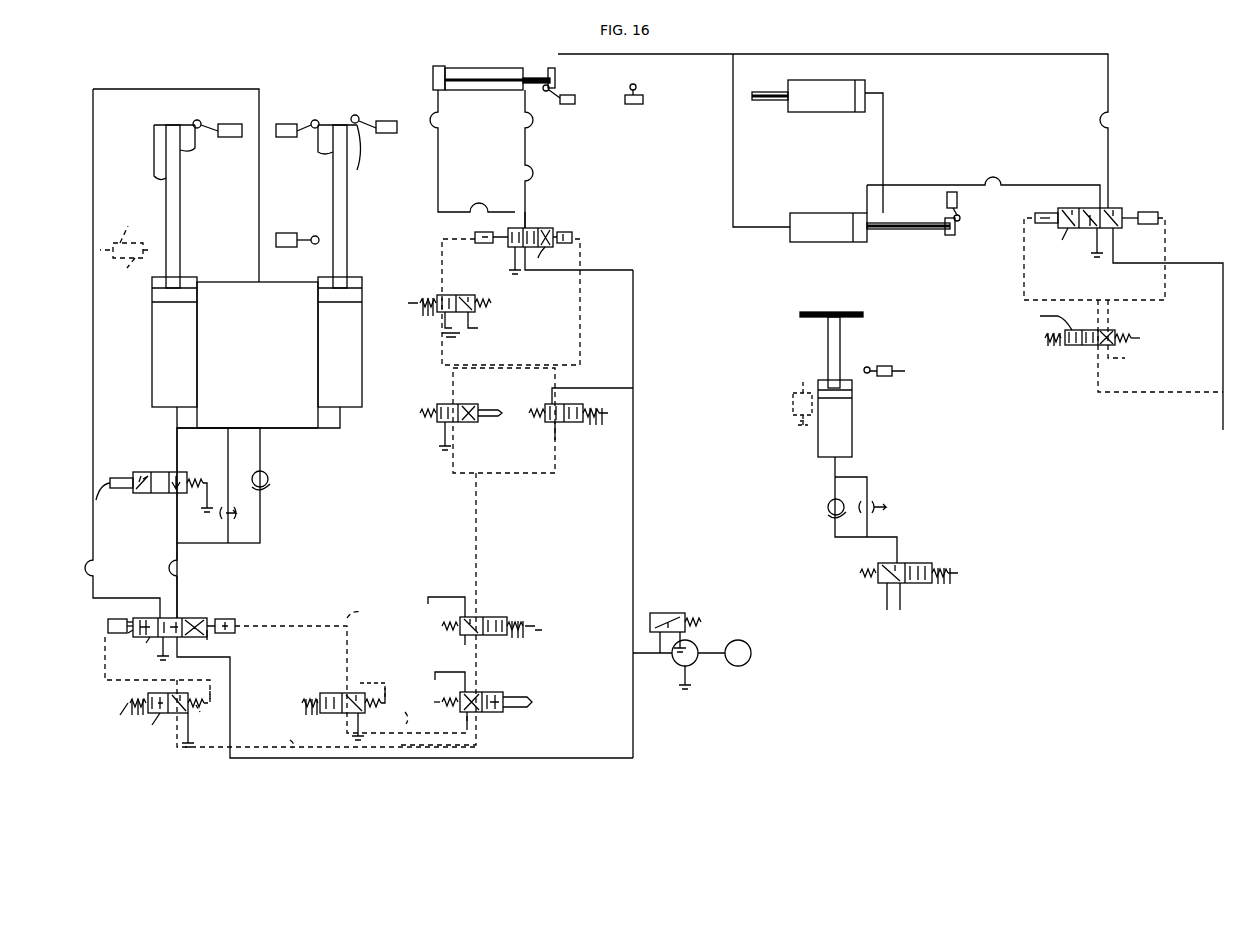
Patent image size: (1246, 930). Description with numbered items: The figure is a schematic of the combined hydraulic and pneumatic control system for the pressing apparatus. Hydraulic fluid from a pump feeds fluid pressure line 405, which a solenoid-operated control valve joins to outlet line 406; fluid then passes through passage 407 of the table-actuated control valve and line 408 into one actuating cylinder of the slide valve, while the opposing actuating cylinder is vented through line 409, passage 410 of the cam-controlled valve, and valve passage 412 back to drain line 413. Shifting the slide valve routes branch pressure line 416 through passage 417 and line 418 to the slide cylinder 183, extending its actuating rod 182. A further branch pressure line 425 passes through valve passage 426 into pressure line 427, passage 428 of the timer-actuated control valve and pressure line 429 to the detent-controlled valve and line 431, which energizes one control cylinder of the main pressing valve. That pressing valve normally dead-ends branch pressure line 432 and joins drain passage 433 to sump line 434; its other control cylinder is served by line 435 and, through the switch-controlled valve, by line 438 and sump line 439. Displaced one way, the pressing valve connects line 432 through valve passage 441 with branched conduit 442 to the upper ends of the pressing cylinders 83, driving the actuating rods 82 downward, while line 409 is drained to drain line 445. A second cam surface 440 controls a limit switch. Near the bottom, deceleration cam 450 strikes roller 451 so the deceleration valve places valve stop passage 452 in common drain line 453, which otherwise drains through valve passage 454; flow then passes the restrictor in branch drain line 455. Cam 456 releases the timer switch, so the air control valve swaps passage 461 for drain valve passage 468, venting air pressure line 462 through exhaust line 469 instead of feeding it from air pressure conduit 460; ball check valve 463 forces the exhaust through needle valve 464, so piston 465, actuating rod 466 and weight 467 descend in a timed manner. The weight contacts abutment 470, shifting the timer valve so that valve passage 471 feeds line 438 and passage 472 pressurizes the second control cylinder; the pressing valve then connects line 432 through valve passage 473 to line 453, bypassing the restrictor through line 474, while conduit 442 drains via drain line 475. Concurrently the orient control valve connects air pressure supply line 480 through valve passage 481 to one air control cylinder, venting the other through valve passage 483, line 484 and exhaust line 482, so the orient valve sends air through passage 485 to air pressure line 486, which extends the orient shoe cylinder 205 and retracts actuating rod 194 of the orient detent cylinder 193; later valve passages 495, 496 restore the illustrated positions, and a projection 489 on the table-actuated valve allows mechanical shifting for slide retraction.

The actuating rod 82 is at (180, 222).
The fluid pressure actuated cylinder 83 is at (197, 352).
The slide cylinder actuating rod 182 is at (553, 68).
The slide cylinder 183 is at (470, 68).
The orient detent cylinder 193 is at (845, 196).
The orient detent cylinder actuating rod 194 is at (900, 235).
The orient shoe cylinder 205 is at (815, 112).
The fluid pressure line 405 is at (633, 505).
The outlet line 406 is at (530, 478).
The passage 407 is at (458, 422).
The line 408 is at (580, 318).
The line 409 is at (442, 262).
The passage 410 is at (440, 312).
The valve passage 412 is at (437, 406).
The drain line 413 is at (445, 436).
The branch pressure line 416 is at (603, 270).
The passage 417 is at (549, 257).
The line 418 is at (438, 163).
The branch pressure line 425 is at (476, 540).
The valve passage 426 is at (507, 620).
The pressure line 427 is at (476, 658).
The passage 428 is at (478, 712).
The pressure line 429 is at (398, 713).
The line 431 is at (351, 666).
The branch pressure line 432 is at (230, 672).
The drain passage 433 is at (168, 612).
The drain or sump line 434 is at (160, 662).
The line 435 is at (105, 655).
The line 438 is at (272, 737).
The sump line 439 is at (452, 660).
The second cam surface 440 is at (318, 146).
The valve passage 441 is at (200, 637).
The branched conduit 442 is at (93, 531).
The sump or drain line 445 is at (455, 333).
The deceleration cam 450 is at (154, 150).
The roller 451 is at (124, 269).
The valve stop passage 452 is at (133, 470).
The common drain line 453 is at (177, 440).
The valve passage 454 is at (190, 620).
The branch drain line 455 is at (228, 440).
The cam 456 is at (190, 150).
The air pressure conduit 460 is at (887, 605).
The passage 461 is at (888, 563).
The air pressure line 462 is at (890, 537).
The one-way ball check valve 463 is at (828, 504).
The variable orifice needle valve 464 is at (872, 498).
The piston 465 is at (852, 395).
The actuating rod 466 is at (840, 342).
The weight 467 is at (810, 312).
The drain valve passage 468 is at (928, 583).
The exhaust line 469 is at (900, 605).
The roller or abutment 470 is at (803, 375).
The valve passage 471 is at (510, 697).
The passage 472 is at (148, 695).
The valve passage 473 is at (146, 615).
The line 474 is at (260, 520).
The drain line 475 is at (150, 644).
The air pressure supply line 480 is at (1223, 352).
The valve passage 481 is at (1040, 319).
The exhaust line 482 is at (1160, 346).
The valve passage 483 is at (1090, 318).
The line 484 is at (1165, 232).
The passage 485 is at (1060, 242).
The air pressure line 486 is at (975, 160).
The plunger 489 is at (508, 402).
The valve passage 495 is at (1110, 330).
The valve passage 496 is at (1092, 345).